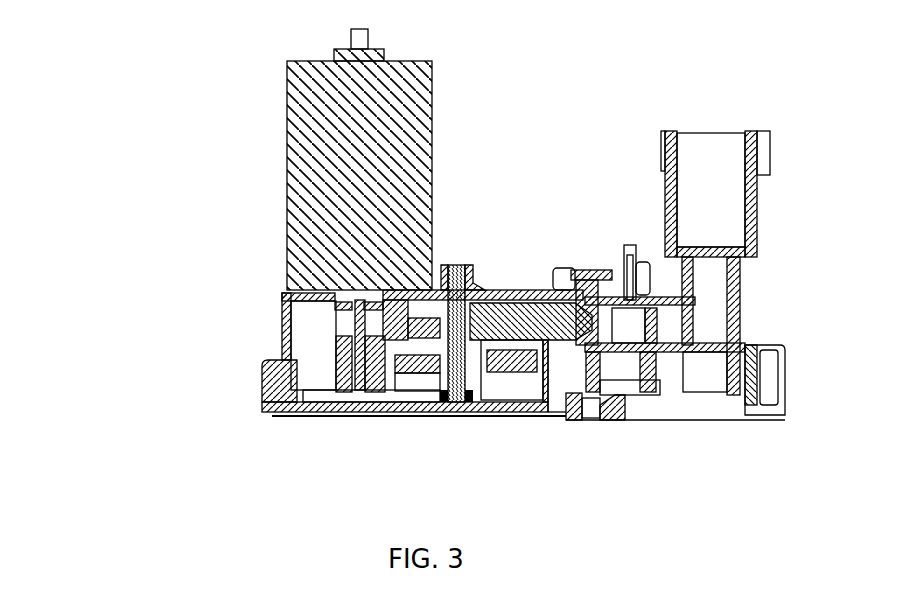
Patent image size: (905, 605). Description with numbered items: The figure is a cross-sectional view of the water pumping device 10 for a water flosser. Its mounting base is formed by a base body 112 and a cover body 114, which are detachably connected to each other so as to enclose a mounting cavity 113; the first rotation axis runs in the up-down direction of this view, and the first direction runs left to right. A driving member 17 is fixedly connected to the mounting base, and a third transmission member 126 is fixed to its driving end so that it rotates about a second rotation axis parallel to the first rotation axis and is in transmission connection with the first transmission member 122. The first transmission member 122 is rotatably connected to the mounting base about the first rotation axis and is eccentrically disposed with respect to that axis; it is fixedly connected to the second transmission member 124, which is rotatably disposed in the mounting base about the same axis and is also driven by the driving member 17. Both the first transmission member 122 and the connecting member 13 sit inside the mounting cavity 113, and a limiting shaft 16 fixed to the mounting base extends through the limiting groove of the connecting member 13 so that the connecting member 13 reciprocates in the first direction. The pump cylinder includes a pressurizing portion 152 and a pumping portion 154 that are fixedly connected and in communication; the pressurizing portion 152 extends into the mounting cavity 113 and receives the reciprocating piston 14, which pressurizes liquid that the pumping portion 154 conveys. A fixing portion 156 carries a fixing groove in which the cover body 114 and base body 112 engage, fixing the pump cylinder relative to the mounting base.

The water pumping device 10 is at (138, 83).
The driving member 17 is at (287, 173).
The base body 112 is at (262, 397).
The mounting cavity 113 is at (318, 353).
The cover body 114 is at (283, 298).
The third transmission member 126 is at (340, 395).
The second transmission member 124 is at (407, 395).
The limiting shaft 16 is at (458, 395).
The first transmission member 122 is at (434, 290).
The connecting member 13 is at (532, 293).
The piston 14 is at (600, 270).
The pumping portion 154 is at (745, 290).
The fixing portion 156 is at (593, 355).
The pressurizing portion 152 is at (648, 360).